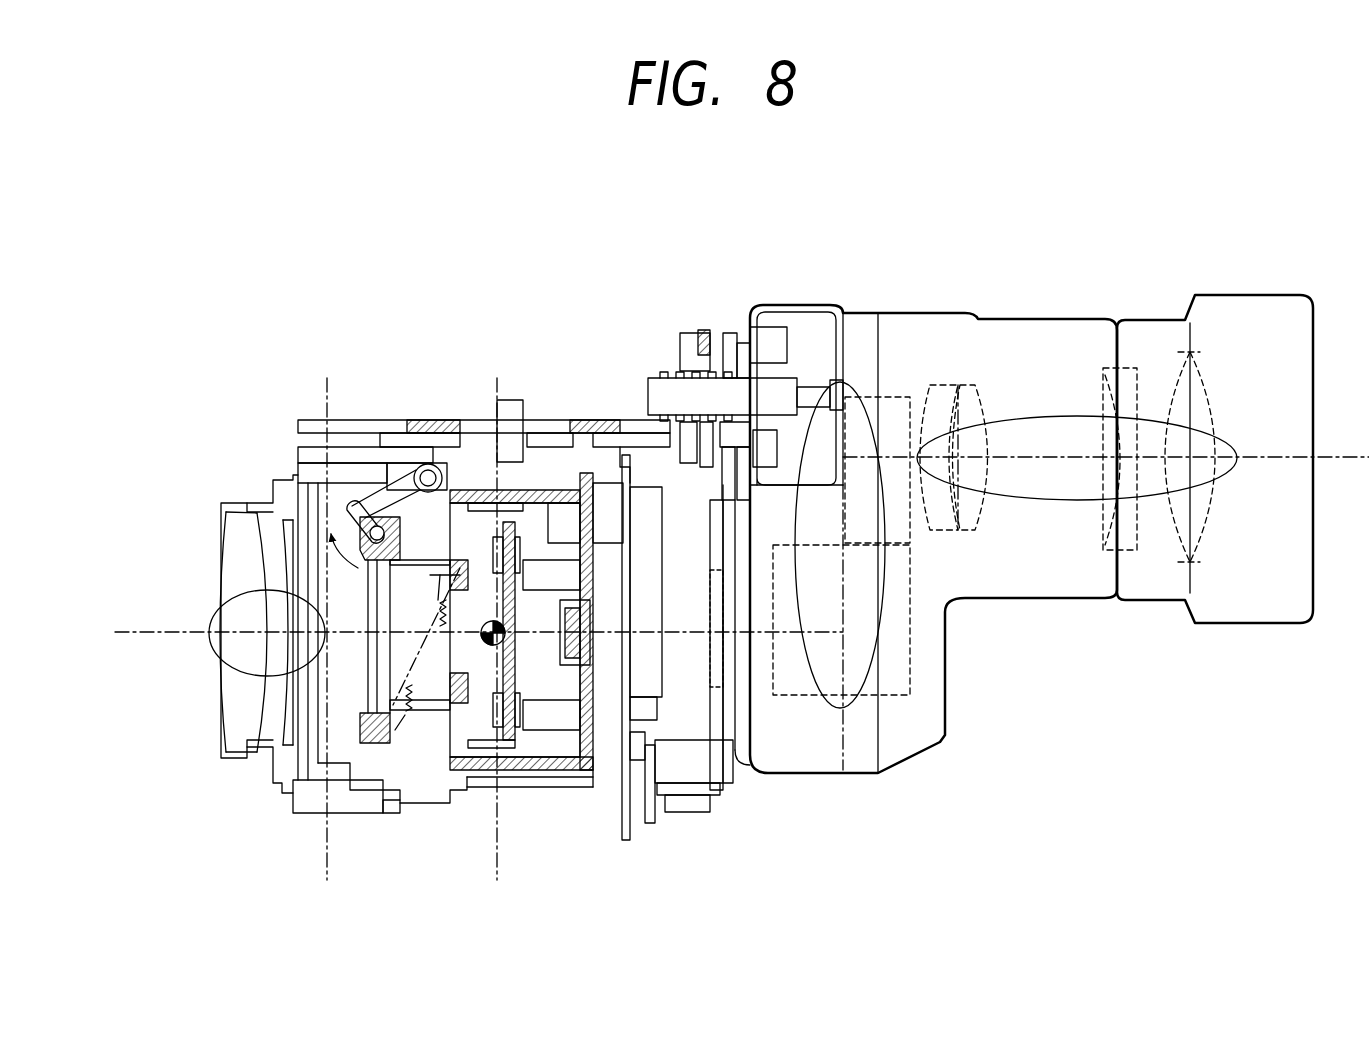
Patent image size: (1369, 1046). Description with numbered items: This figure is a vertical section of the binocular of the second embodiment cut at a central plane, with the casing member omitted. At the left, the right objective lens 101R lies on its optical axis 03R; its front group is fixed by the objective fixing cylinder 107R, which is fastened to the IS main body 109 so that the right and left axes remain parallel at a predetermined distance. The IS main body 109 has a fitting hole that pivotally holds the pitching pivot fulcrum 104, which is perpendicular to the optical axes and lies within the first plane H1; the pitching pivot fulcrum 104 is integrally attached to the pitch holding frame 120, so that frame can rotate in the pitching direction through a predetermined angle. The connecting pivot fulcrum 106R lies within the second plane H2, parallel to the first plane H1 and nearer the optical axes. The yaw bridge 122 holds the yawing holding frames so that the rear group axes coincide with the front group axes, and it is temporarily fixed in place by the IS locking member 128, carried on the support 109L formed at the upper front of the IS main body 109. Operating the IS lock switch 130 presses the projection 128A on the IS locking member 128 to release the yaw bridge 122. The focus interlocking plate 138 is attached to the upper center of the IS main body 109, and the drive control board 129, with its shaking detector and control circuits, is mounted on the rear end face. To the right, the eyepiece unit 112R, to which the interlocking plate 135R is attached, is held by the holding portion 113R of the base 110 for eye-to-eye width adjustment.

The first plane H1 is at (500, 392).
The second plane H2 is at (327, 392).
The optical axis 03R is at (152, 632).
The objective lens 101R is at (210, 647).
The pitching pivot fulcrum 104 is at (493, 647).
The connecting pivot fulcrum 106R is at (318, 478).
The objective fixing cylinder 107R is at (263, 753).
The IS main body 109 is at (515, 737).
The support 109L is at (422, 455).
The base 110 is at (647, 440).
The eyepiece unit 112R is at (1022, 300).
The holding portion 113R is at (733, 770).
The pitch holding frame 120 is at (513, 735).
The yaw bridge 122 is at (352, 768).
The IS locking member 128 is at (405, 463).
The projection 128A is at (487, 450).
The drive control board 129 is at (623, 843).
The IS lock switch 130 is at (520, 405).
The interlocking plate 135R is at (703, 500).
The focus interlocking plate 138 is at (305, 425).